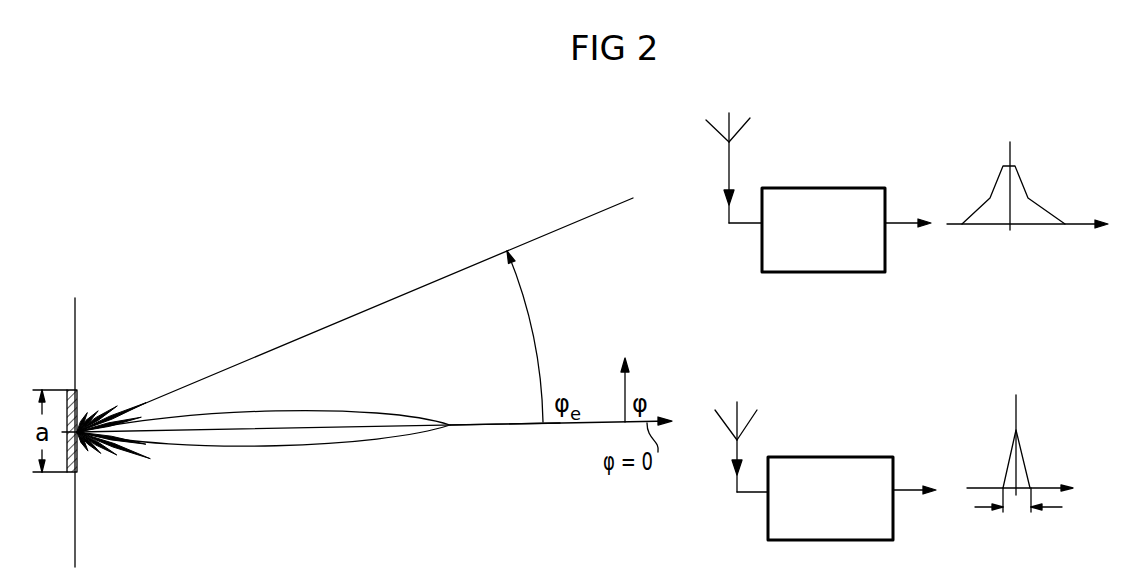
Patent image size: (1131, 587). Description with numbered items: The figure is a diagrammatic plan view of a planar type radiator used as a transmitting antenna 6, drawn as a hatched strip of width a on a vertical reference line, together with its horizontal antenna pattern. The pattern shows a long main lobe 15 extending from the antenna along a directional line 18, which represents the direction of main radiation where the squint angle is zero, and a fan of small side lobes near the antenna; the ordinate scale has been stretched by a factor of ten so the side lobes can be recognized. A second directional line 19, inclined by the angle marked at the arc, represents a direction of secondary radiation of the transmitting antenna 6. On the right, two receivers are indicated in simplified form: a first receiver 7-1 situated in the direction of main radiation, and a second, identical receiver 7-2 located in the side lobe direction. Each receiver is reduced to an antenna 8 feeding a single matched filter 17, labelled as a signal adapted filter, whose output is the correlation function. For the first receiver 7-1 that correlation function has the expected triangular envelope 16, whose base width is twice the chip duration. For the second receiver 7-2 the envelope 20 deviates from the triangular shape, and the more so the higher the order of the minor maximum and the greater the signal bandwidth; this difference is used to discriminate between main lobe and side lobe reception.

The transmitting antenna 6 is at (77, 398).
The main lobe 15 is at (365, 440).
The directional line 18 is at (604, 423).
The directional line 19 is at (606, 208).
The antenna 8 is at (742, 128).
The matched filter 17 is at (831, 200).
The second receiver 7-2 is at (860, 137).
The first receiver 7-1 is at (895, 428).
The envelope curve 20 is at (1028, 182).
The triangular envelope 16 is at (1022, 455).